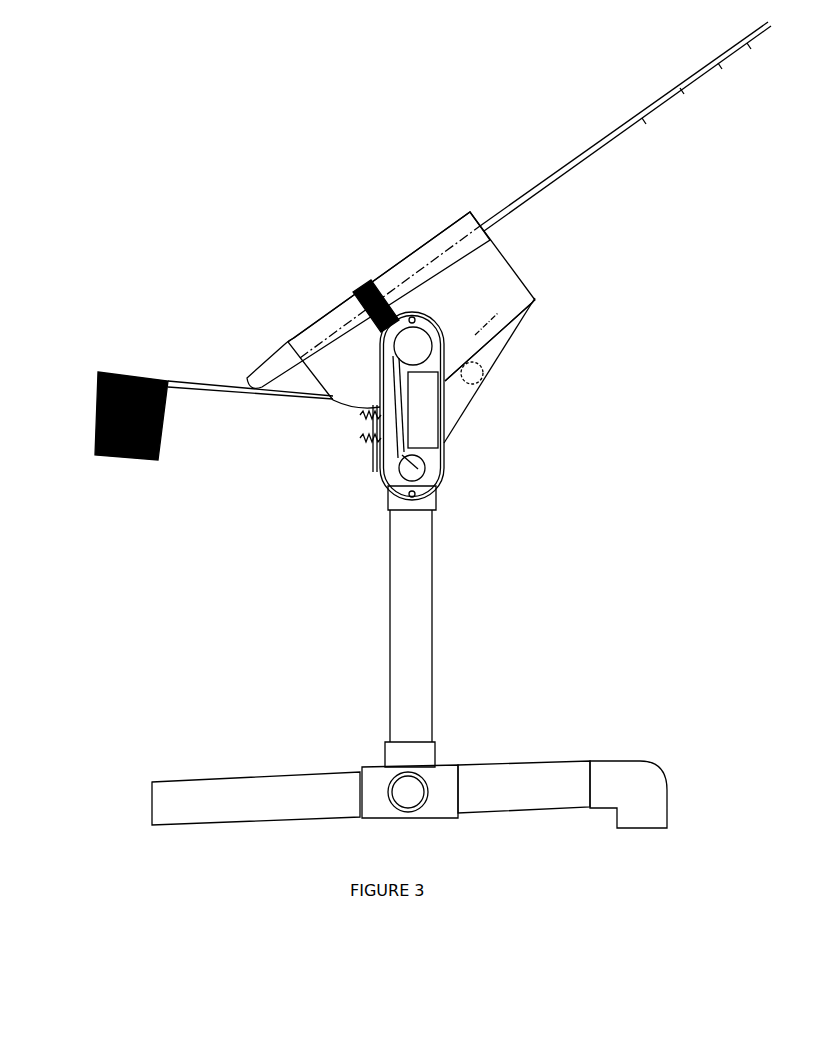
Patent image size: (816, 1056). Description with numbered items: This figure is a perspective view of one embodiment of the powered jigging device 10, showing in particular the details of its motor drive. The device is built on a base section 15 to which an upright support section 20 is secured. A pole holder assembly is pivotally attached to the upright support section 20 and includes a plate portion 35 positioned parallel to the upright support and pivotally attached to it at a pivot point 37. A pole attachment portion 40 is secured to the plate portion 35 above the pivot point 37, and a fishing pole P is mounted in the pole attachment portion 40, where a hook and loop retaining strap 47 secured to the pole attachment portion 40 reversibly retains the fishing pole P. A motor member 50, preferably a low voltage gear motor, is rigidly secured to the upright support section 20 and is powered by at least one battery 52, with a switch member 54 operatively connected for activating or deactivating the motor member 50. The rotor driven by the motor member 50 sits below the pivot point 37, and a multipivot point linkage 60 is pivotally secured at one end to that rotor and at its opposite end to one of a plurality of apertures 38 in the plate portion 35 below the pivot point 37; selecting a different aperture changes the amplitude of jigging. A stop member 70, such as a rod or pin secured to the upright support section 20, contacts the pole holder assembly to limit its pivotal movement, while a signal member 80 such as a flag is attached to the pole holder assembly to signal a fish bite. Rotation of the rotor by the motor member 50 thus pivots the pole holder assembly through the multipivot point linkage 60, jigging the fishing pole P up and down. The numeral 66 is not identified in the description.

The powered jigging device 10 is at (213, 335).
The base section 15 is at (218, 796).
The upright support section 20 is at (413, 600).
The plate portion 35 is at (476, 287).
The pivot point 37 is at (357, 327).
The apertures 38 is at (532, 302).
The pole attachment portion 40 is at (403, 278).
The hook and loop retaining strap 47 is at (352, 290).
The motor member 50 is at (428, 477).
The battery 52 is at (422, 409).
The switch member 54 is at (373, 367).
The multipivot point linkage 60 is at (513, 344).
The pivot 66 is at (470, 373).
The stop member 70 is at (362, 416).
The signal member 80 is at (97, 453).
The fishing pole P is at (545, 173).